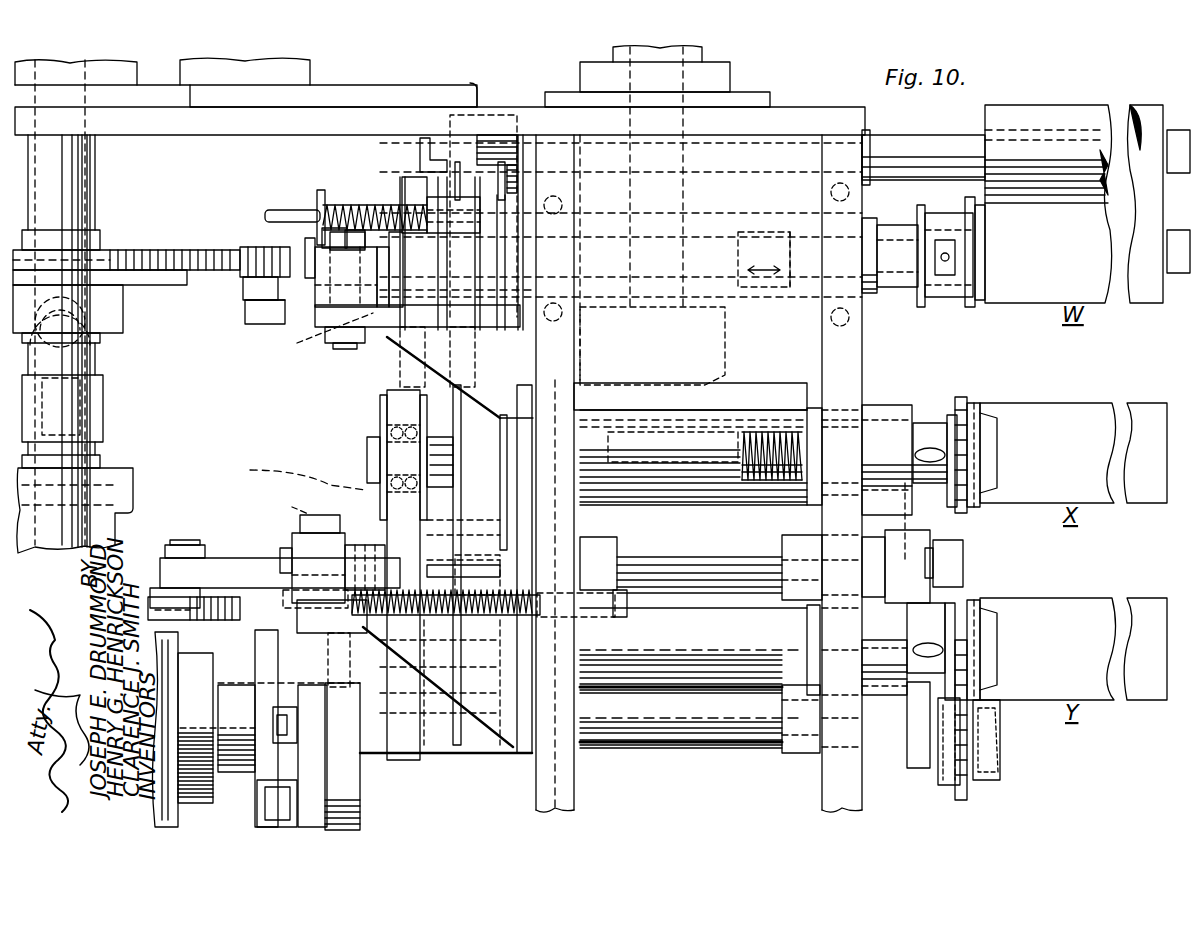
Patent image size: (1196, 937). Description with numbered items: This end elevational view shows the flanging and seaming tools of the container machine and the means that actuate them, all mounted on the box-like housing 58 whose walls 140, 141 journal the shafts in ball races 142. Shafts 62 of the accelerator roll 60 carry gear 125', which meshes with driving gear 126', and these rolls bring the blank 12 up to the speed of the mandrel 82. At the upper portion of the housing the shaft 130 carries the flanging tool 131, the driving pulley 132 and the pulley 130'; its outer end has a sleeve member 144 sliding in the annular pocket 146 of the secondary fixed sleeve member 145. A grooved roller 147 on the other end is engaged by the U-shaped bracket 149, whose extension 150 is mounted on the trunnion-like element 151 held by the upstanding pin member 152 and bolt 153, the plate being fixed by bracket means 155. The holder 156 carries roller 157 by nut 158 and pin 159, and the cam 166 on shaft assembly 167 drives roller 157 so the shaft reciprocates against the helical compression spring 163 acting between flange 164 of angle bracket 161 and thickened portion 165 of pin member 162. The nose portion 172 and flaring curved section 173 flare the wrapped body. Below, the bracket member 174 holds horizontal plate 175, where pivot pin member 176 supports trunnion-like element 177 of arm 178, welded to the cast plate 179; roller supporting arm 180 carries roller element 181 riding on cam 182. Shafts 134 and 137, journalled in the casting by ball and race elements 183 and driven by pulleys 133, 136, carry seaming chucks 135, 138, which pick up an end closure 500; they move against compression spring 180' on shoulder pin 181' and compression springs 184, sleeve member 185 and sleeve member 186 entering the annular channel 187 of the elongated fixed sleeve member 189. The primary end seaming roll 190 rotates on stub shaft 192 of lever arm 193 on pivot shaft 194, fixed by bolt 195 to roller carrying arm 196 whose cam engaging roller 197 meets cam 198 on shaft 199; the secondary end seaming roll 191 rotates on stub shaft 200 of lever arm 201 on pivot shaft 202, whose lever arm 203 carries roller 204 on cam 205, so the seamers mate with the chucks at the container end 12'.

The pulley 130' is at (440, 96).
The shaft assembly 167 is at (97, 210).
The cam 166 is at (130, 250).
The roller 157 is at (250, 247).
The pin 159 is at (250, 287).
The holder 156 is at (250, 302).
The nut 158 is at (250, 320).
The stud-like pin member 162 is at (268, 214).
The angle bracket 161 is at (317, 200).
The flange 164 is at (325, 190).
The helical compression spring 163 is at (336, 205).
The thickened portion 165 is at (400, 205).
The U-shaped bracket 149 is at (405, 195).
The upstanding pin member 152 is at (315, 240).
The trunnion-like element 151 is at (320, 310).
The grooved roller 147 is at (320, 327).
The bracket means 155 is at (385, 345).
The extension 150 is at (350, 347).
The bolt 153 is at (310, 345).
The driving pulley 133 is at (445, 385).
The gear 125' is at (502, 189).
The driving pulley 132 is at (422, 160).
The driving gear 126' is at (586, 249).
The wall 140 is at (574, 788).
The wall 141 is at (810, 473).
The ball races 142 is at (578, 212).
The secondary fixed sleeve member 145 is at (702, 215).
The annular pocket 146 is at (758, 232).
The shaft 130 is at (680, 337).
The annular channel 187 is at (768, 412).
The shaft 134 is at (650, 478).
The elongated fixed sleeve member 189 is at (700, 478).
The compression spring 184 is at (772, 478).
The driving pulley 136 is at (500, 577).
The pivot shaft 194 is at (437, 535).
The shoulder pin 181' is at (667, 614).
The compression spring 180' is at (640, 644).
The horizontal plate 175 is at (446, 614).
The shaft 137 is at (578, 652).
The pivot shaft 202 is at (698, 720).
The box-like housing 58 is at (702, 780).
The cast plate 179 is at (397, 575).
The bracket member 174 is at (475, 745).
The cam engaging roller 197 is at (270, 605).
The roller element 181 is at (180, 533).
The roller supporting arm 180 is at (195, 557).
The cam 182 is at (225, 620).
The trunnion-like element 177 is at (292, 553).
The pivot pin member 176 is at (325, 515).
The bolt 195 is at (270, 540).
The arm 178 is at (370, 545).
The ball and race elements 183 is at (365, 480).
The roller carrying arm 196 is at (265, 655).
The shaft 199 is at (215, 728).
The cam 198 is at (260, 783).
The cam 205 is at (345, 670).
The lever arm 203 is at (360, 780).
The roller 204 is at (360, 810).
The shaft 62 is at (895, 150).
The accelerator roll 60 is at (1045, 93).
The blank 12 is at (1085, 402).
The mandrel 82 is at (1160, 303).
The sleeve member 144 is at (888, 290).
The flanging tool 131 is at (944, 304).
The nose portion 172 is at (980, 307).
The flaring curved section 173 is at (970, 307).
The stub shaft 192 is at (850, 192).
The sleeve member 185 is at (920, 423).
The primary end seaming roll 190 is at (950, 415).
The seaming chuck 135 is at (963, 397).
The end closure 500 is at (975, 403).
The roll end 12' is at (1016, 595).
The lever arm 193 is at (925, 530).
The sleeve member 186 is at (922, 645).
The seaming chuck 138 is at (965, 603).
The lever arm 201 is at (912, 768).
The stub shaft 200 is at (938, 780).
The secondary end seaming roll 191 is at (967, 785).